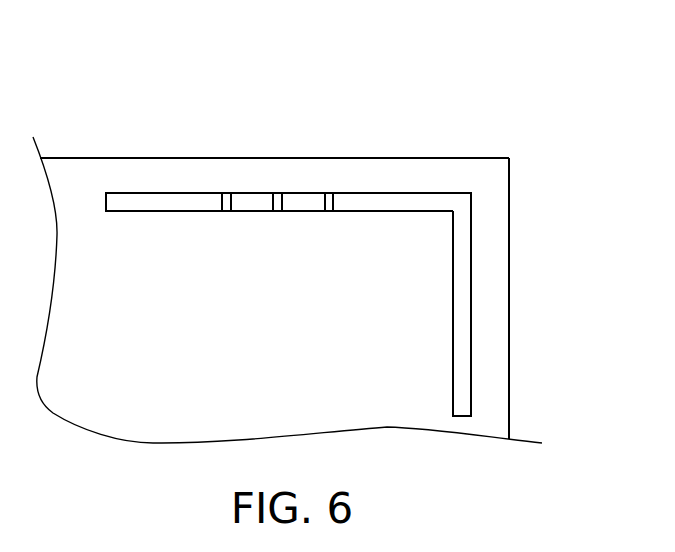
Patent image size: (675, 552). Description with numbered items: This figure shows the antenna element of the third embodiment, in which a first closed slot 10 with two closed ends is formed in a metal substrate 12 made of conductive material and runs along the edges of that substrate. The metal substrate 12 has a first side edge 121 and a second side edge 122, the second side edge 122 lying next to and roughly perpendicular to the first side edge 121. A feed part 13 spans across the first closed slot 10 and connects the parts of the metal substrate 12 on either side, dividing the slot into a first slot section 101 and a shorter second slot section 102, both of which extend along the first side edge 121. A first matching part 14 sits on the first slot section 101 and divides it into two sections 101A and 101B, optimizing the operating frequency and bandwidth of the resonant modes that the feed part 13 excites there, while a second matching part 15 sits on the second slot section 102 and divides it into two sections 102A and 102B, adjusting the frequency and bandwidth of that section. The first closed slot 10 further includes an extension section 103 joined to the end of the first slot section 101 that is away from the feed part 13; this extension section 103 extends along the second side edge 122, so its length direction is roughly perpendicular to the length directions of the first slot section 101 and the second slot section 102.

The first closed slot 10 is at (362, 223).
The metal substrate 12 is at (307, 274).
The feed part 13 is at (280, 200).
The first matching part 14 is at (335, 210).
The second matching part 15 is at (227, 200).
The first slot section 101 is at (376, 139).
The section of first slot section 101A is at (310, 200).
The section of first slot section 101B is at (402, 158).
The second slot section 102 is at (189, 138).
The section of second slot section 102A is at (162, 202).
The section of second slot section 102B is at (243, 158).
The extension section 103 is at (462, 345).
The first side edge 121 is at (85, 158).
The second side edge 122 is at (509, 190).